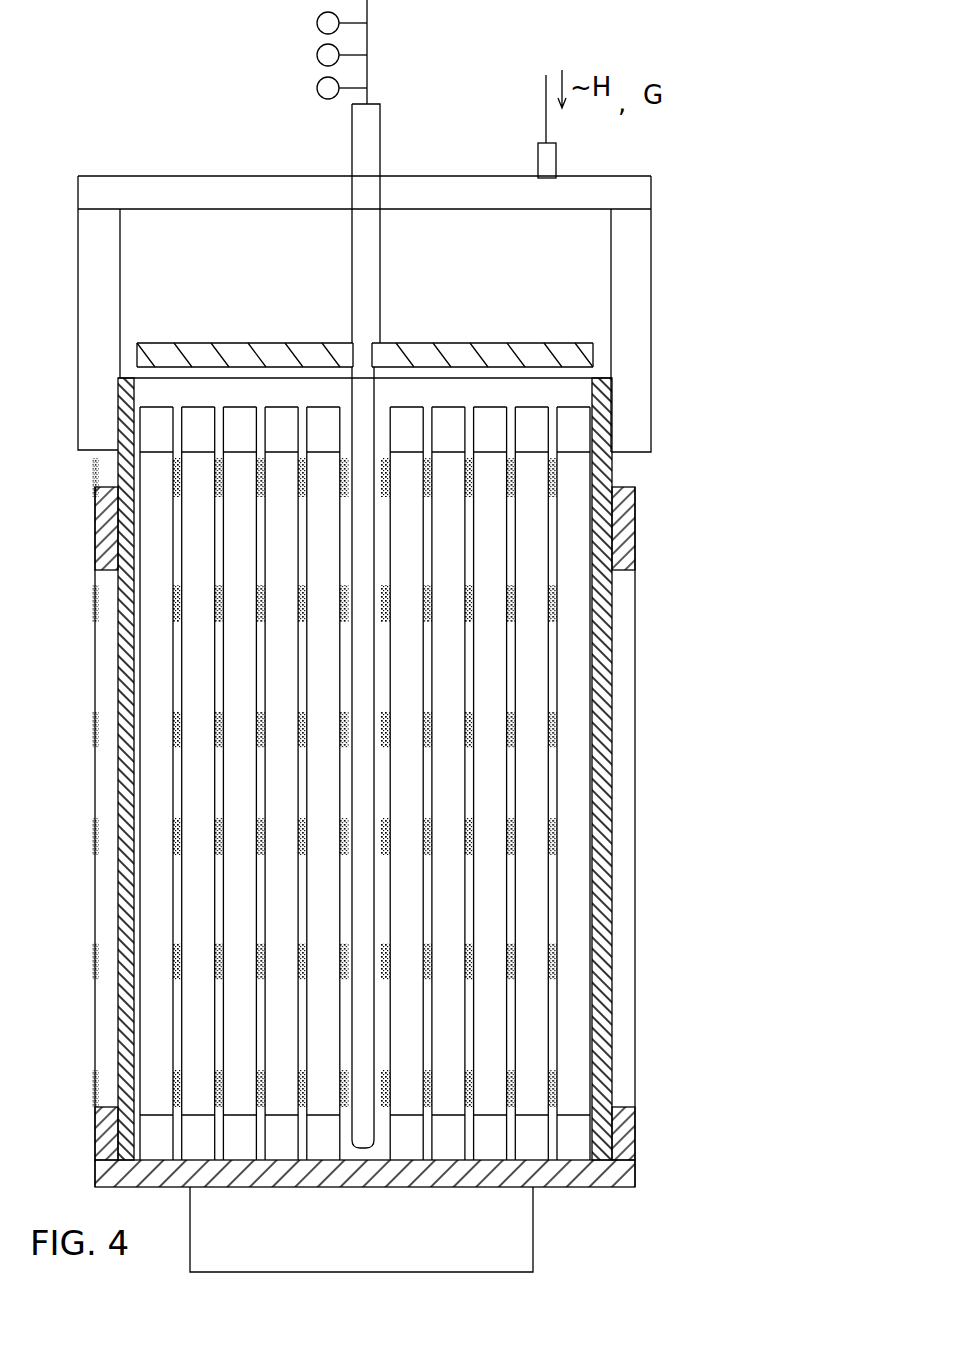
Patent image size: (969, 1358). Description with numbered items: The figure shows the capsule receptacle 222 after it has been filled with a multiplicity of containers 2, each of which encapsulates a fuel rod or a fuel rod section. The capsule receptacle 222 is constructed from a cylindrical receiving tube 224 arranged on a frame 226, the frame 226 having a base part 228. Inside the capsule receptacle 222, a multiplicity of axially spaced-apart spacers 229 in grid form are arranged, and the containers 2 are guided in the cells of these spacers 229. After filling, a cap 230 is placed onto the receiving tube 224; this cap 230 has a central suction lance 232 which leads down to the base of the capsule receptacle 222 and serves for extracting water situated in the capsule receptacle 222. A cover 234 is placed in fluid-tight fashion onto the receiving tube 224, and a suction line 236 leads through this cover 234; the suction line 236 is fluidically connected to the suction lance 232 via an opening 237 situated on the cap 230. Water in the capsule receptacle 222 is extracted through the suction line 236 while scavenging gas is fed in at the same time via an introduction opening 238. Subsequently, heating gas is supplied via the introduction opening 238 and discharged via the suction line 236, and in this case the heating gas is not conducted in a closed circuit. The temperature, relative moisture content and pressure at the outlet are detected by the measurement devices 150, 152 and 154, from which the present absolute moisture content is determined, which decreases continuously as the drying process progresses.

The container 2 is at (527, 885).
The measurement device 150 is at (321, 90).
The measurement device 152 is at (321, 55).
The measurement device 154 is at (326, 24).
The capsule receptacle 222 is at (668, 876).
The receiving tube 224 is at (610, 963).
The frame 226 is at (635, 515).
The base part 228 is at (517, 1233).
The spacer 229 is at (558, 733).
The cap 230 is at (585, 353).
The suction lance 232 is at (362, 680).
The cover 234 is at (640, 257).
The suction line 236 is at (378, 142).
The opening 237 is at (366, 343).
The introduction opening 238 is at (545, 163).